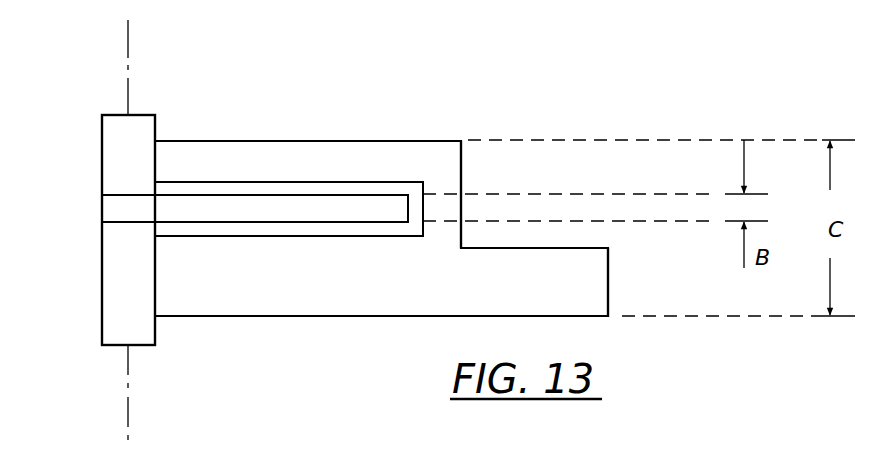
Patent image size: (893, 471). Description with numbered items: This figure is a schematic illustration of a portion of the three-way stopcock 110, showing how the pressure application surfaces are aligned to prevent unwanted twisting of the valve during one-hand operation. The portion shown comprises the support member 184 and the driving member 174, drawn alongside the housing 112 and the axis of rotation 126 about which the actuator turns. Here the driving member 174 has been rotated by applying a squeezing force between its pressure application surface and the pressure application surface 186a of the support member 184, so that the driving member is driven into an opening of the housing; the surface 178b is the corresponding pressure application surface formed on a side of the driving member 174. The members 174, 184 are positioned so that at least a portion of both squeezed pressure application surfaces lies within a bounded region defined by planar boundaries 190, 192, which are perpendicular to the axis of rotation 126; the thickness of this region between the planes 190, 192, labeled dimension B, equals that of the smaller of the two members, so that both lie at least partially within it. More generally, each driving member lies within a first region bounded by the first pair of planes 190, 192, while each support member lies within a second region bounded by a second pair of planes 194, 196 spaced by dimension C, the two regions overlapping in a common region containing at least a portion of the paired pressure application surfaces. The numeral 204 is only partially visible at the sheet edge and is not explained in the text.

The three-way stopcock 110 is at (207, 118).
The housing 112 is at (142, 327).
The axis of rotation 126 is at (128, 52).
The driving member 174 is at (263, 199).
The pressure application surface 178b is at (367, 207).
The third support member 184 is at (403, 258).
The pressure application surface 186a is at (443, 207).
The planar boundary 190 is at (563, 192).
The planar boundary 192 is at (688, 224).
The plane 194 is at (627, 137).
The plane 196 is at (700, 316).
The element (partially visible) 204 is at (404, 466).